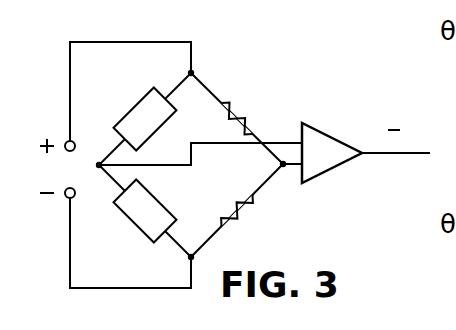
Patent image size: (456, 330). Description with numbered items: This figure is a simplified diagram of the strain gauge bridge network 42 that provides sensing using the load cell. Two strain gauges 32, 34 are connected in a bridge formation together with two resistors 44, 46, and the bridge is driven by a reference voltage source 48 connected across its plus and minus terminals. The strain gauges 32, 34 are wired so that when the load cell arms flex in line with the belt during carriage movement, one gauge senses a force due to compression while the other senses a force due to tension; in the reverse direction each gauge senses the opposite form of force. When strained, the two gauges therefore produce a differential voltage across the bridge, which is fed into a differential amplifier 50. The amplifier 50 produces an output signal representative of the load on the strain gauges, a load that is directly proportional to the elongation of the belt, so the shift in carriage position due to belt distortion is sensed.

The strain gauge 32 is at (150, 93).
The strain gauge 34 is at (143, 234).
The strain gauge bridge network 42 is at (298, 86).
The resistor 44 is at (245, 112).
The resistor 46 is at (253, 207).
The reference voltage source 48 is at (42, 180).
The differential amplifier 50 is at (332, 135).